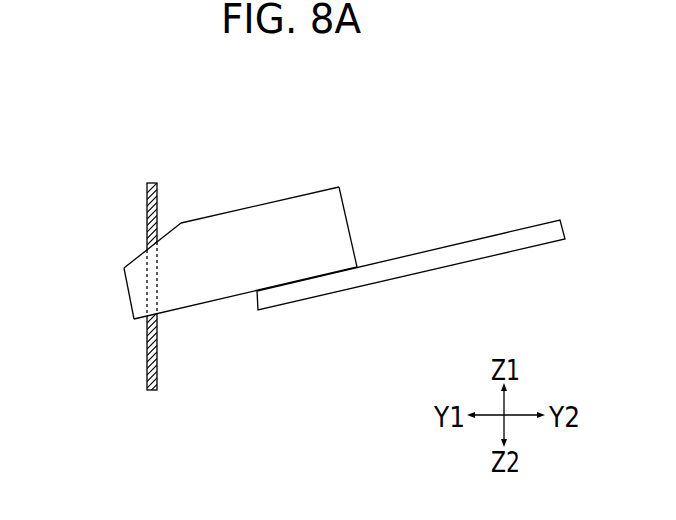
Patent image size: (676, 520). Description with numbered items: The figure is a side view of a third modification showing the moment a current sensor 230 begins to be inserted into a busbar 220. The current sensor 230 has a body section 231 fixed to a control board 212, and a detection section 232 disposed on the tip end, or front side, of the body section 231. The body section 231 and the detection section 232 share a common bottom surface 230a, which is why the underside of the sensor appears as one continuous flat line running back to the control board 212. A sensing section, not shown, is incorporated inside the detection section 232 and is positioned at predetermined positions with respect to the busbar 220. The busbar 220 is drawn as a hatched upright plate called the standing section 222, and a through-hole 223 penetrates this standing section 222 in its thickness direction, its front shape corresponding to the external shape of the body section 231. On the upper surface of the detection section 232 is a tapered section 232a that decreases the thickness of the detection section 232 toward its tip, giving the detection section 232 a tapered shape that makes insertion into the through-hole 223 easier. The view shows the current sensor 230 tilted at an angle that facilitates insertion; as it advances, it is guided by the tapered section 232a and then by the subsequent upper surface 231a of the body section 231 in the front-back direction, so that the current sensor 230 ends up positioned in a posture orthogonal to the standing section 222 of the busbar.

The control board 212 is at (495, 245).
The busbar 220 is at (157, 183).
The standing section 222 is at (143, 198).
The through-hole 223 is at (145, 247).
The current sensor 230 is at (308, 210).
The bottom surface 230a is at (240, 295).
The body section 231 is at (318, 262).
The upper surface of the body section 231a is at (262, 203).
The detection section 232 is at (172, 298).
The tapered section 232a is at (173, 228).